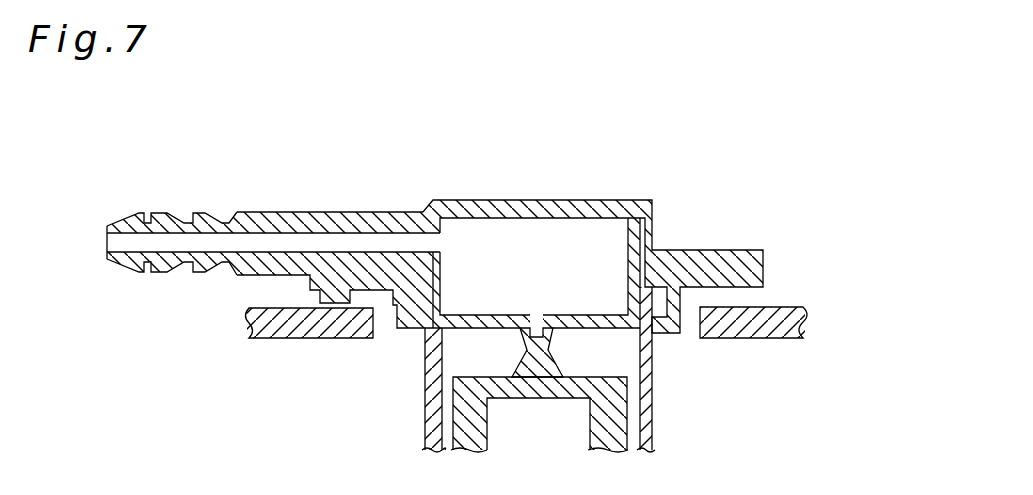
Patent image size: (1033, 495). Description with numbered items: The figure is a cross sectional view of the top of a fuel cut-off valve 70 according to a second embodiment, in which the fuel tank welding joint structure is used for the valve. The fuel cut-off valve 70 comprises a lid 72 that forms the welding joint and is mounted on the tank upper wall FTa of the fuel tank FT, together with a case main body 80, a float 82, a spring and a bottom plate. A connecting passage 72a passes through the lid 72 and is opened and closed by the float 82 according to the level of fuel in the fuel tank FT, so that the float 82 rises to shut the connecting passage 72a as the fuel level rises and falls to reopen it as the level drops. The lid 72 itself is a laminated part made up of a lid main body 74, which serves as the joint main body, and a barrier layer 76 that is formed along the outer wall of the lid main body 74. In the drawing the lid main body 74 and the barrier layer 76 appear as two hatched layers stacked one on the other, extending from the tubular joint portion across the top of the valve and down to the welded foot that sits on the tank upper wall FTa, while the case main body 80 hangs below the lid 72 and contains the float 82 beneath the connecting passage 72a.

The fuel cut-off valve 70 is at (709, 190).
The lid 72 is at (571, 200).
The connecting passage 72a is at (381, 246).
The lid main body 74 is at (349, 212).
The barrier layer 76 is at (295, 212).
The case main body 80 is at (645, 406).
The float 82 is at (618, 430).
The tank upper wall FTa is at (786, 307).
The fuel tank FT is at (560, 296).